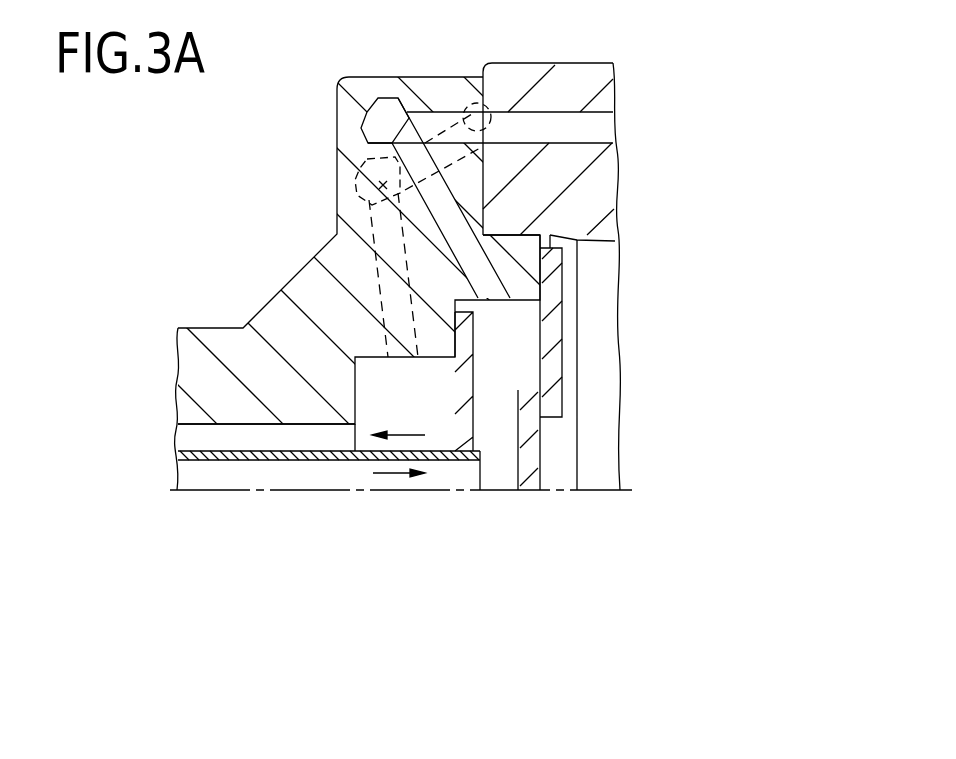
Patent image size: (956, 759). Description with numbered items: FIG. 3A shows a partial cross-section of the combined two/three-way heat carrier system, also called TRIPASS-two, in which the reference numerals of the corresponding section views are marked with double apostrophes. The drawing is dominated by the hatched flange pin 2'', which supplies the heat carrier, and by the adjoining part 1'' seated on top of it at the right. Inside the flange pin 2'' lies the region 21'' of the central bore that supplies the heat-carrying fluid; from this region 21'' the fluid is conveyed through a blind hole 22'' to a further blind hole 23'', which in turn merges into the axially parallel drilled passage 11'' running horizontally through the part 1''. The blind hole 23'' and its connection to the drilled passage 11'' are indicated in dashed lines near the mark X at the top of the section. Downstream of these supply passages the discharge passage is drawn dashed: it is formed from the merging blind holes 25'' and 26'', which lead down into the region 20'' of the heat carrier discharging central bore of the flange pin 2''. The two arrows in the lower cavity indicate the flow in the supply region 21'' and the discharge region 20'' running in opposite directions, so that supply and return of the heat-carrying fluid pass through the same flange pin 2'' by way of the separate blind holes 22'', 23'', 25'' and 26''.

The housing part / cover 1'' is at (594, 251).
The flange pin 2'' is at (413, 265).
The axially parallel drilled passage 11'' is at (490, 71).
The region of the heat carrier discharging central bore 20'' is at (276, 439).
The region of the central bore of the flange pin 21'' is at (352, 416).
The blind hole 22'' is at (393, 71).
The blind hole 23'' is at (452, 95).
The blind hole 25'' is at (381, 198).
The blind hole 26'' is at (335, 257).
The axis / position mark X is at (490, 108).